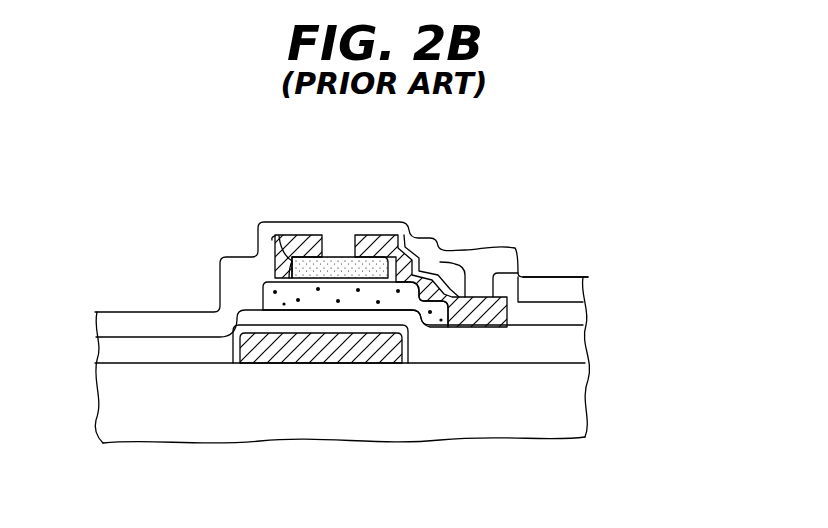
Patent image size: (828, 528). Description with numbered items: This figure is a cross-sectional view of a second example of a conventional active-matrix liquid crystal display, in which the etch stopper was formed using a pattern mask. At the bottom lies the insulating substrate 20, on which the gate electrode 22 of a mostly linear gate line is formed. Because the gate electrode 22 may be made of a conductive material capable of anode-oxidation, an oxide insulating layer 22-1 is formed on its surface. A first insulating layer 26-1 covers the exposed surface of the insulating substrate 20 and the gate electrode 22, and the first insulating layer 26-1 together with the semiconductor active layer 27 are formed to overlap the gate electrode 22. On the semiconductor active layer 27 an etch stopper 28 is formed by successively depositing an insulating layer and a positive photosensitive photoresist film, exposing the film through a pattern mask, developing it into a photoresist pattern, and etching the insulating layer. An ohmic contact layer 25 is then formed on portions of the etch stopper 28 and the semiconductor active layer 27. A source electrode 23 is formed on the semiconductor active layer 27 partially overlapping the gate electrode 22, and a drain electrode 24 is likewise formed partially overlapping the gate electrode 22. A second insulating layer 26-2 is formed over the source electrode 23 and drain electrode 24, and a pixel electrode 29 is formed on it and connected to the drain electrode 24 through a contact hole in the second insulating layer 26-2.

The insulating substrate 20 is at (573, 398).
The gate electrode 22 is at (280, 364).
The oxide insulating layer 22-1 is at (402, 366).
The source electrode 23 is at (310, 237).
The drain electrode 24 is at (400, 246).
The ohmic contact layer 25 is at (273, 238).
The first insulating layer 26-1 is at (583, 338).
The second insulating layer 26-2 is at (335, 231).
The semiconductor active layer 27 is at (435, 324).
The etch stopper 28 is at (343, 263).
The pixel electrode 29 is at (548, 288).